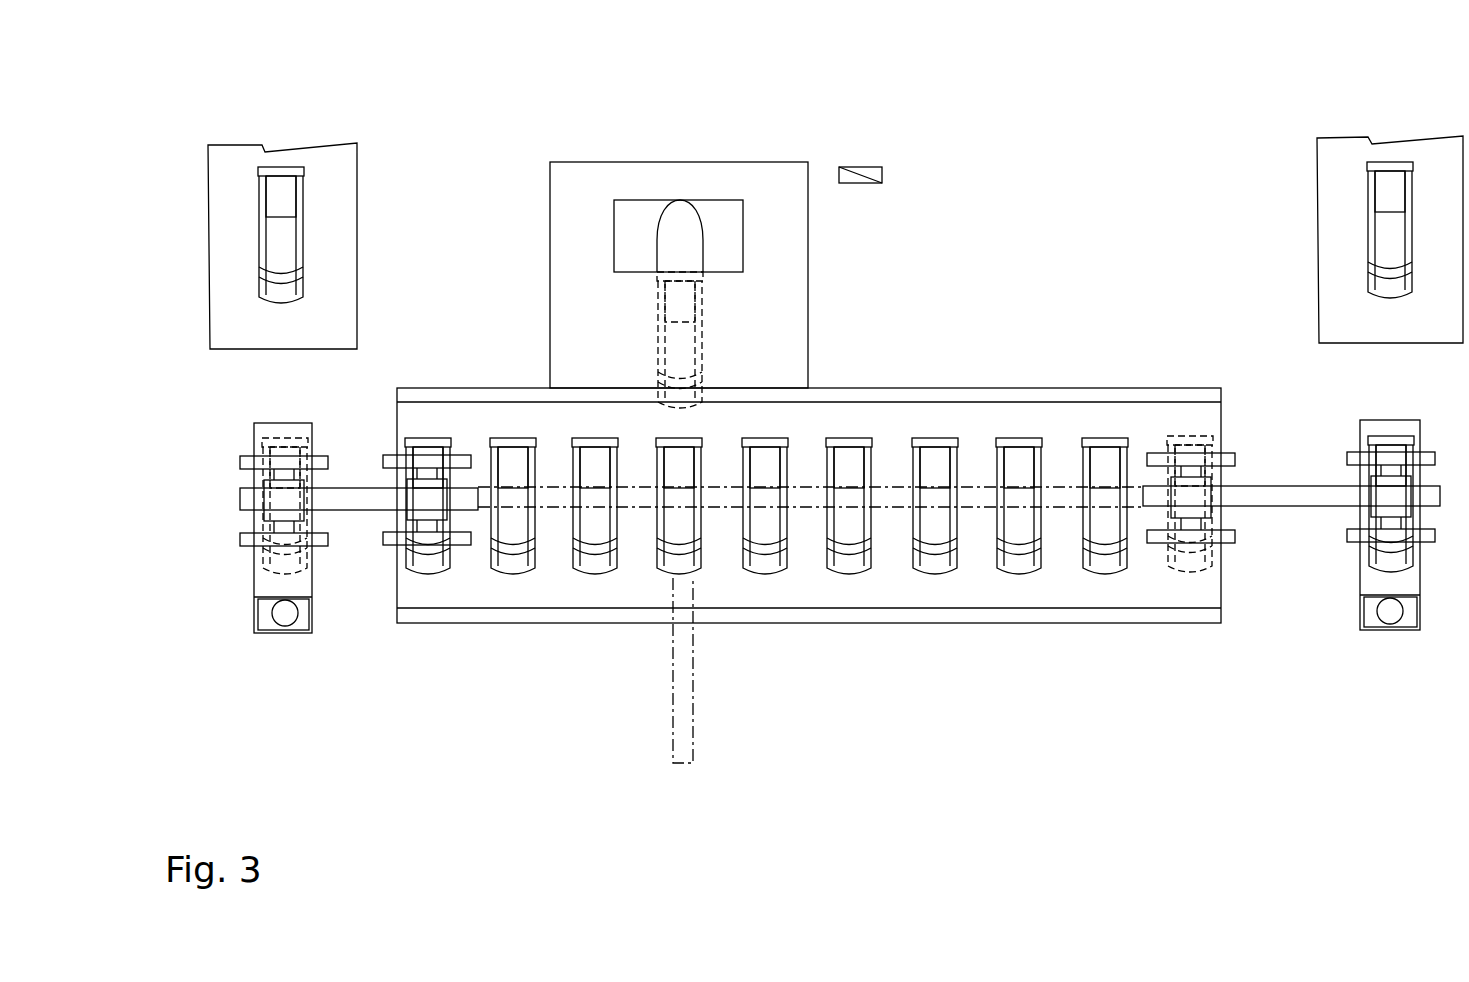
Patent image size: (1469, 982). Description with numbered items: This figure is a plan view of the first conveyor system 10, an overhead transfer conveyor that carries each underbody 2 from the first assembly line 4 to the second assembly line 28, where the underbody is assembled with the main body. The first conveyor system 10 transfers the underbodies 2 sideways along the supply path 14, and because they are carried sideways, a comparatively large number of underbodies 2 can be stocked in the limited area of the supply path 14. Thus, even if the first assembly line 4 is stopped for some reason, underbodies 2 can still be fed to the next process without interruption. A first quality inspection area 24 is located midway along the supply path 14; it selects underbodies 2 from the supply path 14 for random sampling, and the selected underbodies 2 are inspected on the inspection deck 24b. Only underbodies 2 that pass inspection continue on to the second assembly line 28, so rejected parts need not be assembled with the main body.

The underbody 2 is at (267, 262).
The first assembly line 4 is at (1323, 189).
The first conveyor system 10 is at (1086, 174).
The supply path 14 is at (1152, 590).
The first quality inspection area 24 is at (542, 250).
The inspection deck 24b is at (562, 200).
The second assembly line 28 is at (228, 220).